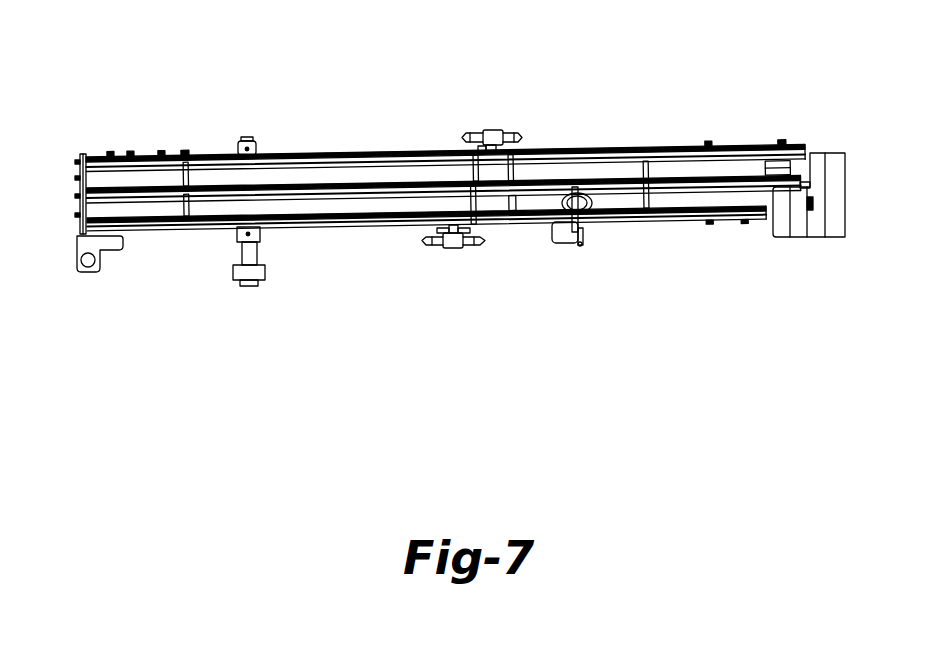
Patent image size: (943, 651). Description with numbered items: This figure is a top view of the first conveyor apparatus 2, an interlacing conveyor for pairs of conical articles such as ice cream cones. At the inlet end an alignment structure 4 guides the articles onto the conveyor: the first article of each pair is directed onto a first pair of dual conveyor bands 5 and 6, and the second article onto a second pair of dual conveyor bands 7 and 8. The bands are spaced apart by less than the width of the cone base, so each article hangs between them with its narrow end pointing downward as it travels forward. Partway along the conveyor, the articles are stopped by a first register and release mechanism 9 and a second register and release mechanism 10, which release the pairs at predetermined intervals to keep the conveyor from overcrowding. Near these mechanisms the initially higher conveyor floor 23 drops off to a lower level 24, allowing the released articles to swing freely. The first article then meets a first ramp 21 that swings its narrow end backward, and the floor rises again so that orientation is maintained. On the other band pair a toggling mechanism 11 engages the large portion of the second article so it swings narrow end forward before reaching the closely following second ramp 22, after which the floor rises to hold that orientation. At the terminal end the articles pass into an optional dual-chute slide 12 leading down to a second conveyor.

The first conveyor apparatus 2 is at (97, 147).
The alignment structure 4 is at (80, 176).
The dual conveyor band 5 is at (163, 157).
The dual conveyor band 6 is at (192, 157).
The dual conveyor band 7 is at (204, 216).
The dual conveyor band 8 is at (150, 234).
The first register and release mechanism 9 is at (490, 134).
The second register and release mechanism 10 is at (455, 245).
The toggling mechanism 11 is at (596, 221).
The dual-chute slide 12 is at (832, 162).
The first ramp 21 is at (655, 170).
The second ramp 22 is at (660, 212).
The conveyor floor 23 is at (427, 172).
The lower level 24 is at (596, 168).